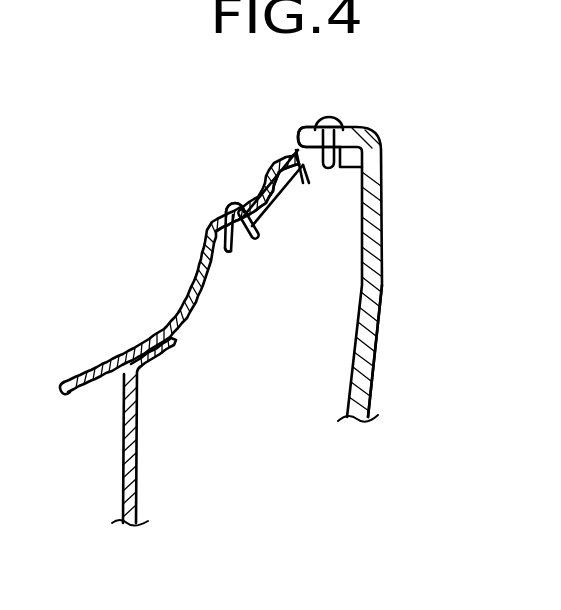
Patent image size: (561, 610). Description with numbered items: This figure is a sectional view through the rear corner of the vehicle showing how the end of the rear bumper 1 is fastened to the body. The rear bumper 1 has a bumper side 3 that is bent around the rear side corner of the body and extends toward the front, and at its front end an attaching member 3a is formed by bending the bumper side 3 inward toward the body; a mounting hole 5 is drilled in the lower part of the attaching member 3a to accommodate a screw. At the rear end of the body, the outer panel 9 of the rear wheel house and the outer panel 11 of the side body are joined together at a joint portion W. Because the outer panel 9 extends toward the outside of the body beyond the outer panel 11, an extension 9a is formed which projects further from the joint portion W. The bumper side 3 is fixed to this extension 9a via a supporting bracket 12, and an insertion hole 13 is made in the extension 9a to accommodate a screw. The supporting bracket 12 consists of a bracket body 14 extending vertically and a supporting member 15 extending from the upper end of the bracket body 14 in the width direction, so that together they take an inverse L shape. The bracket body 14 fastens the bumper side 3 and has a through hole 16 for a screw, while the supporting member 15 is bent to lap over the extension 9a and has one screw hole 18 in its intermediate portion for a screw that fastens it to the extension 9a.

The rear bumper 1 is at (372, 389).
The bumper side 3 is at (383, 250).
The attaching member 3a is at (300, 124).
The mounting hole 5 is at (332, 168).
The outer panel of rear wheel house 9 is at (72, 380).
The extension 9a is at (200, 306).
The outer panel of side body 11 is at (139, 466).
The supporting bracket 12 is at (302, 190).
The insertion hole 13 is at (237, 200).
The bracket body 14 is at (366, 165).
The supporting member 15 is at (236, 245).
The through hole 16 is at (340, 120).
The screw hole 18 is at (260, 226).
The joint portion W is at (165, 362).